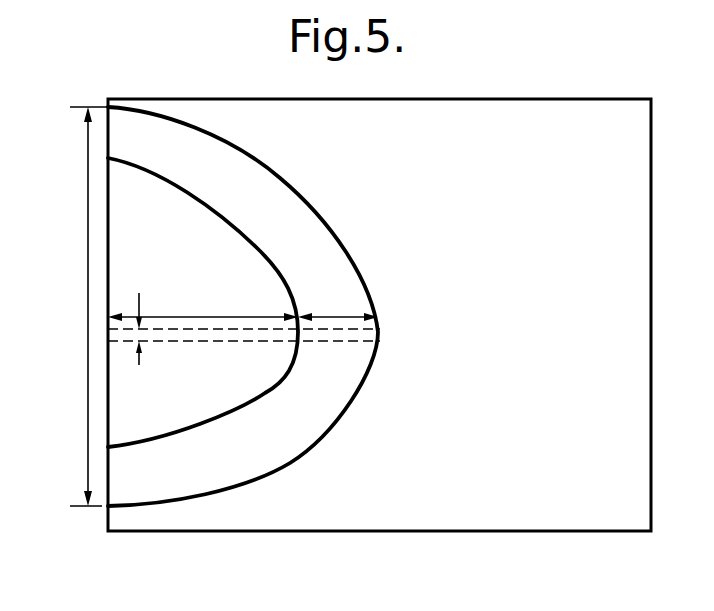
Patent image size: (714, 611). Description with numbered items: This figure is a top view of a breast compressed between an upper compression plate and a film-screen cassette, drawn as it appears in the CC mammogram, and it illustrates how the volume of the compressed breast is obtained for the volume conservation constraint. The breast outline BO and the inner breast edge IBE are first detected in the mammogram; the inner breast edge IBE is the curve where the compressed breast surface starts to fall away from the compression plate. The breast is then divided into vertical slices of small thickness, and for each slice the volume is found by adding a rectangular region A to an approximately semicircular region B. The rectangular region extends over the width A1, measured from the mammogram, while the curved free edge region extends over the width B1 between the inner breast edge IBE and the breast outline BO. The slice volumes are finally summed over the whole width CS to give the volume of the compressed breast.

The breast outline BO is at (362, 267).
The inner breast edge IBE is at (257, 248).
The width cs CS is at (70, 306).
The width A1 of rectangular region A A1 is at (203, 299).
The width B1 of semicircular region B B1 is at (338, 299).